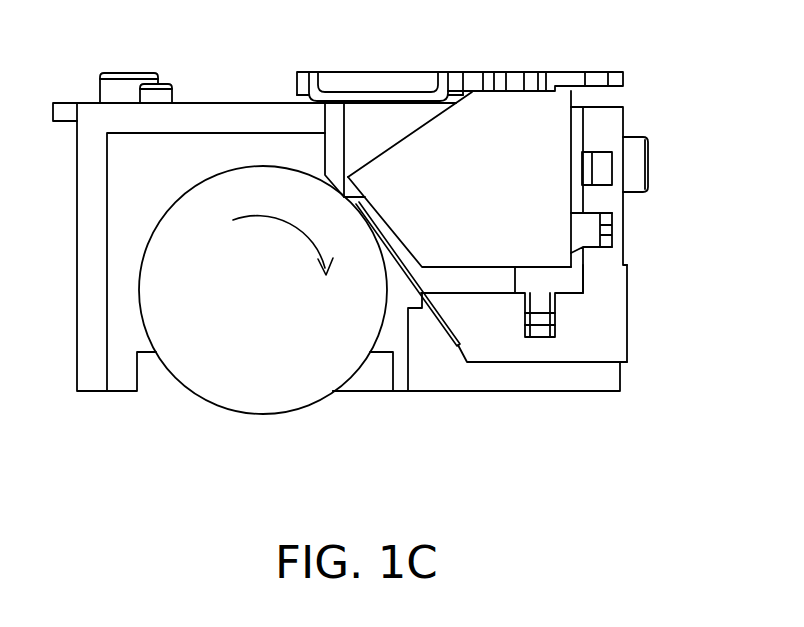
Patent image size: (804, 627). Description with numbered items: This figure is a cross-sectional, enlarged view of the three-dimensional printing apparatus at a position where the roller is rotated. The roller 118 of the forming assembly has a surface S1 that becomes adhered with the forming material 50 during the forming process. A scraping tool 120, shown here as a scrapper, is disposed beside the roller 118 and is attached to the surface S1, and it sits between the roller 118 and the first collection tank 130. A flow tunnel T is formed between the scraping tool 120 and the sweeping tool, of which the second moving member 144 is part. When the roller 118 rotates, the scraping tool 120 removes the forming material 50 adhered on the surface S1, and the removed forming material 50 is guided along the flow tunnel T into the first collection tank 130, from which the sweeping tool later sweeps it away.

The roller 118 is at (280, 338).
The forming material 50 is at (349, 198).
The scraping tool 120 is at (410, 308).
The second moving member 144 is at (555, 127).
The first collection tank 130 is at (600, 337).
The flow tunnel T is at (390, 236).
The surface S1 is at (387, 298).